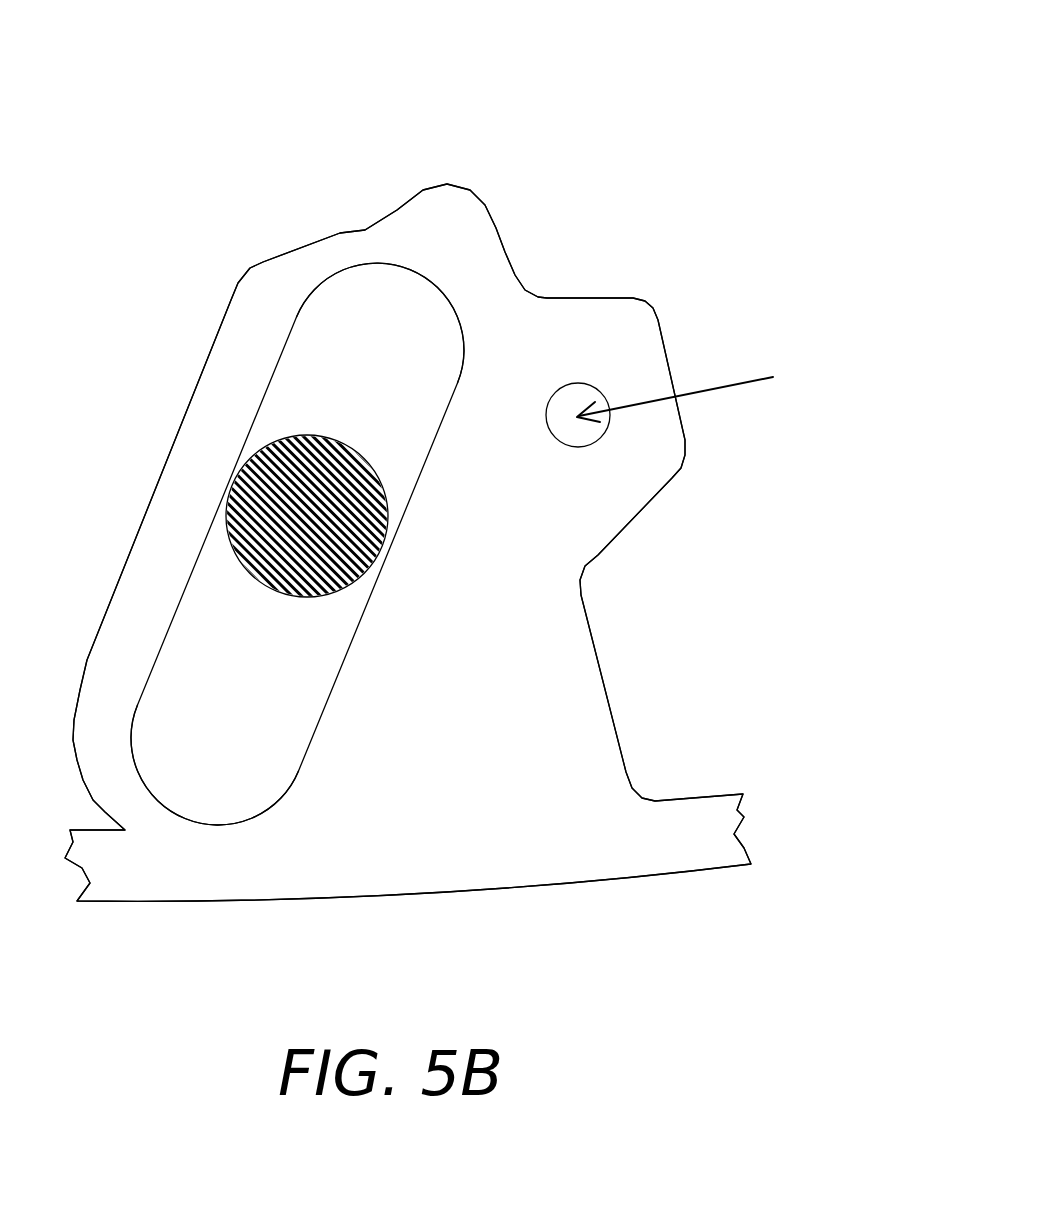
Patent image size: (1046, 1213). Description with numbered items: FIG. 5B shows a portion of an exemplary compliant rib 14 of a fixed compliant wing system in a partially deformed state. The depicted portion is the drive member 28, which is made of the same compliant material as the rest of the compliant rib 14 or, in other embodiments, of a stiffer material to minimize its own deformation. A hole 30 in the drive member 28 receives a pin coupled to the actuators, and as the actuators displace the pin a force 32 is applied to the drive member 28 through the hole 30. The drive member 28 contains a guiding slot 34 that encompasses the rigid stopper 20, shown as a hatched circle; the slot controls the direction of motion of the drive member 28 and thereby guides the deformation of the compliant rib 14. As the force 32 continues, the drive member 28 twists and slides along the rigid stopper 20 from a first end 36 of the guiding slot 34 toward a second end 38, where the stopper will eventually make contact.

The compliant rib 14 is at (575, 82).
The rigid stopper 20 is at (300, 602).
The drive member 28 is at (507, 732).
The hole 30 is at (562, 383).
The force 32 is at (703, 388).
The guiding slot 34 is at (343, 360).
The first end 36 is at (210, 826).
The second end 38 is at (378, 262).